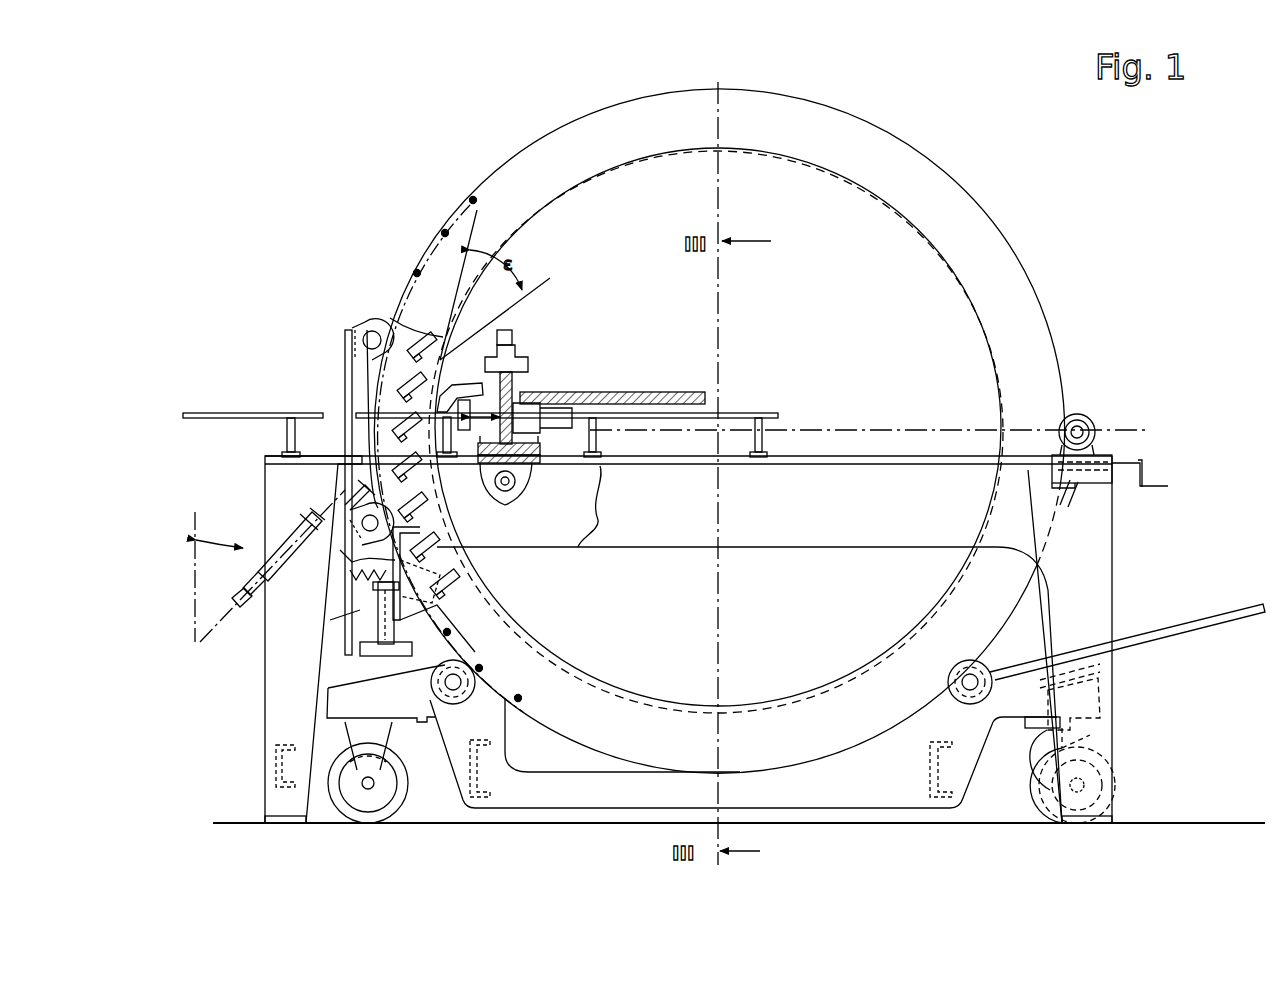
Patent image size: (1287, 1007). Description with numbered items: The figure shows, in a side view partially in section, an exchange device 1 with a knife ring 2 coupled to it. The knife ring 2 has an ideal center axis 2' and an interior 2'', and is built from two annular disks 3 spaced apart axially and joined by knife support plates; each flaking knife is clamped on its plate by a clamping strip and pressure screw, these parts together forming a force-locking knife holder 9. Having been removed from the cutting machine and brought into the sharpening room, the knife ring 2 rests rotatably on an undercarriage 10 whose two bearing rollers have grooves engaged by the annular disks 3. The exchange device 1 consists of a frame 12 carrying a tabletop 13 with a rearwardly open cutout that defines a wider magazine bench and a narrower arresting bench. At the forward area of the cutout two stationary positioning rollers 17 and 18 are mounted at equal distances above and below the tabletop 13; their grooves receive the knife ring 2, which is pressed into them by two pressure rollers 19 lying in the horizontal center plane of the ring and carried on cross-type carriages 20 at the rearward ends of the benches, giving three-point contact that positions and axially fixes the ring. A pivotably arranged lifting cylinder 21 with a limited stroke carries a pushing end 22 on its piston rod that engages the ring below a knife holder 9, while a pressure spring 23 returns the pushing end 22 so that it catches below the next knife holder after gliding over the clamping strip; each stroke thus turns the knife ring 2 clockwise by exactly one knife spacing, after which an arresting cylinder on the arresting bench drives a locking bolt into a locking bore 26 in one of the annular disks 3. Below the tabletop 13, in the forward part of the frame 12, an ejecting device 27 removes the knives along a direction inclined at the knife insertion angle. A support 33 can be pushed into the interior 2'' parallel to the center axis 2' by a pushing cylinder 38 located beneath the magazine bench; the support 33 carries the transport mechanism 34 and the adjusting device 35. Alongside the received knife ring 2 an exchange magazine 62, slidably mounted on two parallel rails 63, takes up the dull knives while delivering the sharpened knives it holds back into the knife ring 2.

The exchange device 1 is at (266, 383).
The knife ring 2 is at (791, 432).
The center axis 2' is at (746, 396).
The interior 2'' is at (823, 328).
The annular disks 3 is at (934, 186).
The knife holder 9 is at (468, 570).
The undercarriage 10 is at (826, 800).
The frame 12 is at (284, 690).
The tabletop 13 is at (856, 456).
The positioning roller 17 is at (364, 325).
The positioning roller 18 is at (364, 532).
The pressure rollers 19 is at (1090, 422).
The cross-type carriages 20 is at (1118, 458).
The lifting cylinder 21 is at (382, 605).
The pushing end 22 is at (430, 543).
The pressure spring 23 is at (368, 563).
The locking bore 26 is at (415, 273).
The ejecting device 27 is at (287, 530).
The support 33 is at (533, 360).
The transport mechanism 34 is at (452, 384).
The adjusting device 35 is at (463, 440).
The pushing cylinder 38 is at (517, 489).
The exchange magazine 62 is at (597, 392).
The rails 63 is at (226, 413).